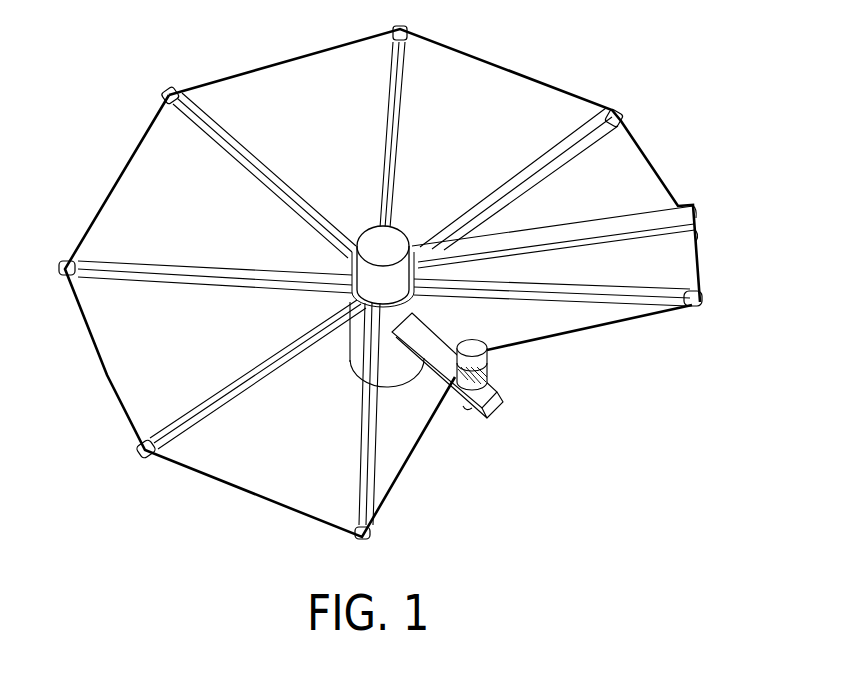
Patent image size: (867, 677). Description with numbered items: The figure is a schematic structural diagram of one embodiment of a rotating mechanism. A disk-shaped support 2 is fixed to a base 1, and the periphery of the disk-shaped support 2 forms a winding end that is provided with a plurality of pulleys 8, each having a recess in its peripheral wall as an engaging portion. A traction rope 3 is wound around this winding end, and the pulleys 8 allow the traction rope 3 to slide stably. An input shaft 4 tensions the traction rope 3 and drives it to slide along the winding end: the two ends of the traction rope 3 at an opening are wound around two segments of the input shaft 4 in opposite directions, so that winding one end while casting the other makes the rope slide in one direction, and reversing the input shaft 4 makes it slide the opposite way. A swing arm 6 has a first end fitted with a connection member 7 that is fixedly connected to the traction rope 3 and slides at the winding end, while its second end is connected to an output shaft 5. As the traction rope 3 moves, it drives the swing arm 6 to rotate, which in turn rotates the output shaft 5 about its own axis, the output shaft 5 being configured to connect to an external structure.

The base 1 is at (423, 357).
The disk-shaped support 2 is at (148, 263).
The traction rope 3 is at (105, 375).
The input shaft 4 is at (473, 352).
The output shaft 5 is at (386, 244).
The swing arm 6 is at (620, 225).
The connection member 7 is at (700, 237).
The pulleys 8 is at (702, 305).